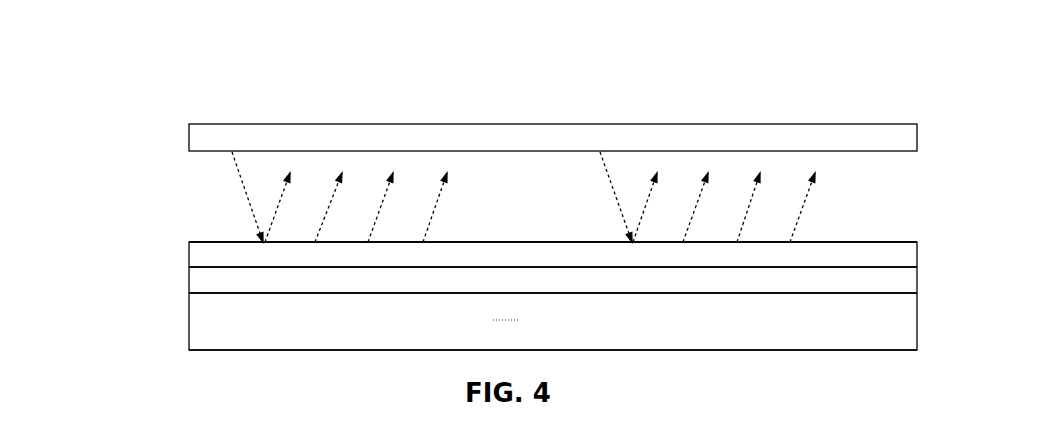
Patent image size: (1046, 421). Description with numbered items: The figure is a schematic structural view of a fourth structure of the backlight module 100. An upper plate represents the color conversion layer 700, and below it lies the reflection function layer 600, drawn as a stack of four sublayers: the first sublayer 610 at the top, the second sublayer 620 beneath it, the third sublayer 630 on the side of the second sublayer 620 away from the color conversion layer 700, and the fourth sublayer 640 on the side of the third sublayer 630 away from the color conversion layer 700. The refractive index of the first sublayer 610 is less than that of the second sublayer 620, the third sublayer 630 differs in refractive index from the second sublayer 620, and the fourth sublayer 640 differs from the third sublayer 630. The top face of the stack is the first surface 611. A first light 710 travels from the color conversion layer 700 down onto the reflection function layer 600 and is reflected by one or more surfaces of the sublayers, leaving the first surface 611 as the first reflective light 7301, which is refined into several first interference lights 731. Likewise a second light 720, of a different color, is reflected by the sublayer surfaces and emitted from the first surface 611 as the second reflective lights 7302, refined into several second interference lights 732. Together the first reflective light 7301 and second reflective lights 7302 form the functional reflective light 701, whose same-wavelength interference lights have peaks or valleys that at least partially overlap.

The backlight module 100 is at (118, 62).
The reflection function layer 600 is at (339, 13).
The first sublayer 610 is at (189, 250).
The first surface 611 is at (877, 241).
The second sublayer 620 is at (189, 273).
The third sublayer 630 is at (189, 298).
The fourth sublayer 640 is at (189, 335).
The color conversion layer 700 is at (189, 137).
The functional reflective light 701 is at (786, 25).
The first light 710 is at (225, 197).
The second light 720 is at (588, 197).
The first interference light 731 is at (376, 199).
The second interference light 732 is at (745, 199).
The first reflective light 7301 is at (493, 25).
The second reflective lights 7302 is at (648, 23).